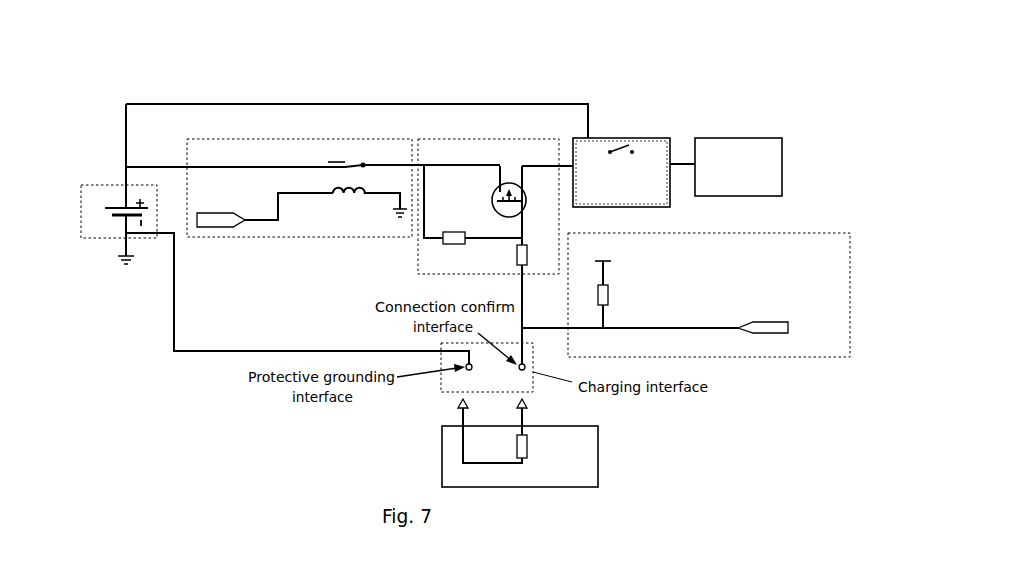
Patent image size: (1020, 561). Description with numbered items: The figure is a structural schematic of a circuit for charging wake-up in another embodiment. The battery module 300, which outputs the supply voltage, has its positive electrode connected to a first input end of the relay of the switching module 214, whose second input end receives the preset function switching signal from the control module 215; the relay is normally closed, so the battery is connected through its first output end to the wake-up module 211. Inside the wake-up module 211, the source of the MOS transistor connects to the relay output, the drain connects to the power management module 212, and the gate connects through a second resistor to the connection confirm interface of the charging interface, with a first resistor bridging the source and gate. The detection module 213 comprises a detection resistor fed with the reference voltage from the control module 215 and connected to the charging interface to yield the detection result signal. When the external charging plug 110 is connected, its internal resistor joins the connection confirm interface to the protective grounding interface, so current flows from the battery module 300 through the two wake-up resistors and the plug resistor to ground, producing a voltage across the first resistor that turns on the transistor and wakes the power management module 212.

The battery module 300 is at (93, 187).
The switching module 214 is at (353, 138).
The wake-up module 211 is at (482, 138).
The power management module 212 is at (613, 137).
The control module 215 is at (740, 137).
The detection module 213 is at (653, 233).
The external charging plug 110 is at (600, 457).